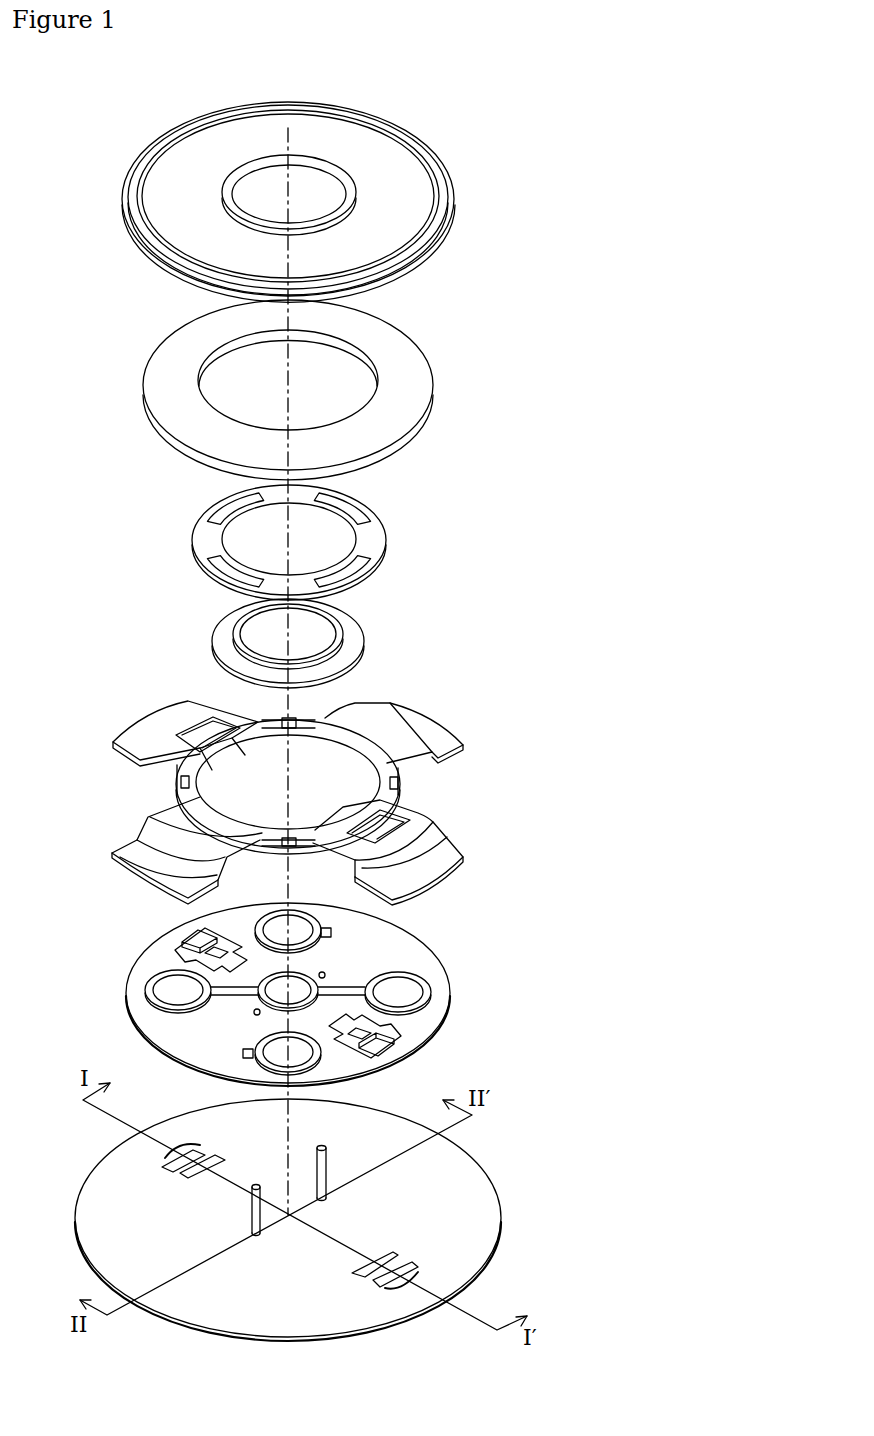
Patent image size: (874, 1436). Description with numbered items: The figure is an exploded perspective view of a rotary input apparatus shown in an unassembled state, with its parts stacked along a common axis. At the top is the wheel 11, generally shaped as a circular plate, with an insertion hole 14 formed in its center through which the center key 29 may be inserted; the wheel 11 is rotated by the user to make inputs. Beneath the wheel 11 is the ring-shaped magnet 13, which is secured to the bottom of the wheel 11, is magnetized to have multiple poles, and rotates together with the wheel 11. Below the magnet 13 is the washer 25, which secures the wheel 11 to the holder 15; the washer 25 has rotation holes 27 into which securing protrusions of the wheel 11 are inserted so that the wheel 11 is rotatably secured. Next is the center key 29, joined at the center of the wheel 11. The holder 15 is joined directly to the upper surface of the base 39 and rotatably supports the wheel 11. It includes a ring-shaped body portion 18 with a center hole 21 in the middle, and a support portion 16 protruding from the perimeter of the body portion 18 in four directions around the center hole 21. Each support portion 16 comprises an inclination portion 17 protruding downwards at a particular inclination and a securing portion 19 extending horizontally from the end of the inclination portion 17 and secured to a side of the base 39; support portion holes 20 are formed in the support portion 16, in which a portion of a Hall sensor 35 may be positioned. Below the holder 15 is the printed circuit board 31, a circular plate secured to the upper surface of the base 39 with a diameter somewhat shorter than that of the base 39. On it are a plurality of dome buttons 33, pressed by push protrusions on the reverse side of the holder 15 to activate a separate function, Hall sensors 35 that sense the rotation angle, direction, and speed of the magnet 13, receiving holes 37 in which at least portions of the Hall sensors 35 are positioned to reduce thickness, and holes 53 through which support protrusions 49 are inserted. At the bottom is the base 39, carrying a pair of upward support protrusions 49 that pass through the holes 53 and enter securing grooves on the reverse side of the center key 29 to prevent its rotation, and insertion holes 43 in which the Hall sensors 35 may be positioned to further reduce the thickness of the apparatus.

The wheel 11 is at (345, 122).
The magnet 13 is at (423, 368).
The insertion hole 14 is at (283, 172).
The holder 15 is at (355, 710).
The support portion 16 is at (165, 815).
The inclination portion 17 is at (432, 839).
The body portion 18 is at (177, 778).
The securing portion 19 is at (448, 859).
The support portion hole 20 is at (385, 832).
The center hole 21 is at (302, 763).
The washer 25 is at (375, 533).
The rotation hole 27 is at (358, 504).
The center key 29 is at (350, 622).
The printed circuit board 31 is at (153, 1025).
The dome button 33 is at (157, 978).
The Hall sensor 35 is at (192, 940).
The receiving hole 37 is at (185, 955).
The base 39 is at (457, 1182).
The insertion hole 43 is at (165, 1160).
The support protrusion 49 is at (252, 1213).
The hole 53 is at (326, 975).